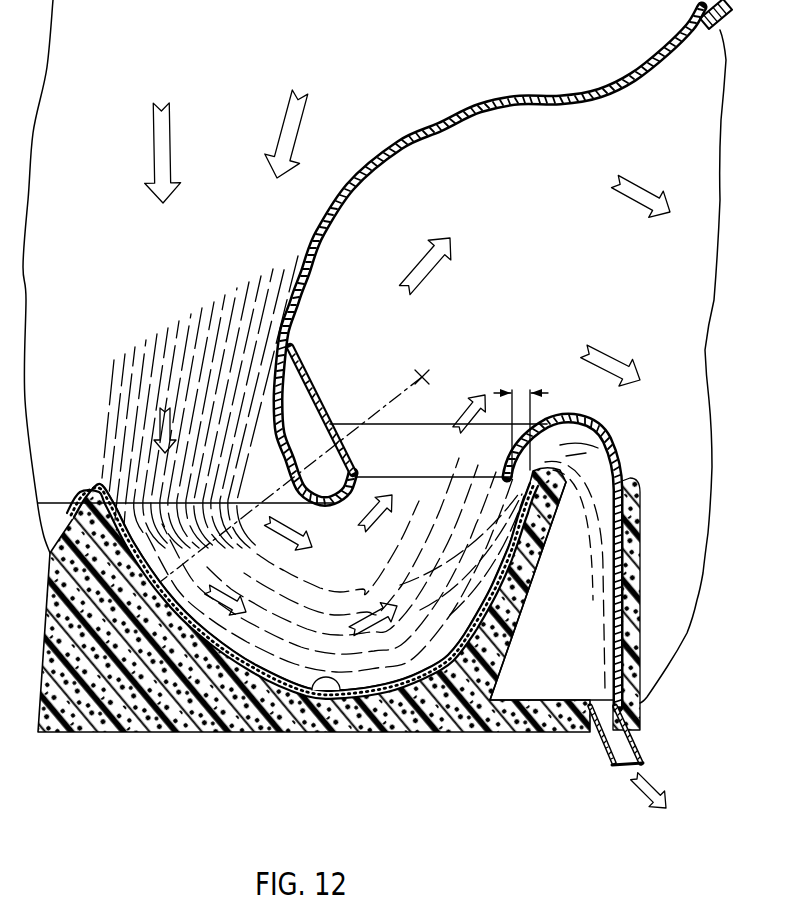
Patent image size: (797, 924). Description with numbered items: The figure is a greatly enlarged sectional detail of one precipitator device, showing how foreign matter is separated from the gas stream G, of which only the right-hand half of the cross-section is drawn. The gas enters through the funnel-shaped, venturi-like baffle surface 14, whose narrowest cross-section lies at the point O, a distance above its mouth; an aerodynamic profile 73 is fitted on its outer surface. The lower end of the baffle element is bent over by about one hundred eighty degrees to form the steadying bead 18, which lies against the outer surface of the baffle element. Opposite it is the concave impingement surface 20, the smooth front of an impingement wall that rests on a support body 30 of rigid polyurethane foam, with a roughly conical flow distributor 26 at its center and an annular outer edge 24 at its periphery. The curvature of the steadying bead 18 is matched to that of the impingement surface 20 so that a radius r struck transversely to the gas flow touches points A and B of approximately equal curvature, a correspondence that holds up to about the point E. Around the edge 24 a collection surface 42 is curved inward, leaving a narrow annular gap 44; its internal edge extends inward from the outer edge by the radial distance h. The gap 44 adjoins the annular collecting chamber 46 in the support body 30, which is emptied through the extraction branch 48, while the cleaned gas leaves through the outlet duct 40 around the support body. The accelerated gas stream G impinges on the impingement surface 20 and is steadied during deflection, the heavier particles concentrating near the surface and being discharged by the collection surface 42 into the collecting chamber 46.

The baffle surface 14 is at (366, 182).
The aerodynamic profile 73 is at (640, 60).
The steadying bead 18 is at (332, 421).
The annular gap 44 is at (537, 440).
The support body 30 is at (270, 712).
The impingement surface 20 is at (70, 517).
The collecting chamber 46 is at (580, 620).
The extraction branch 48 is at (600, 748).
The outlet duct 40 is at (682, 453).
The flow distributor 26 is at (50, 553).
The collection surface 42 is at (505, 466).
The outer edge 24 is at (526, 486).
The radial distance h is at (518, 400).
The radius r is at (233, 523).
The gas stream G is at (155, 168).
The point E is at (500, 540).
The point o O is at (268, 410).
The point B is at (288, 471).
The point A is at (152, 566).